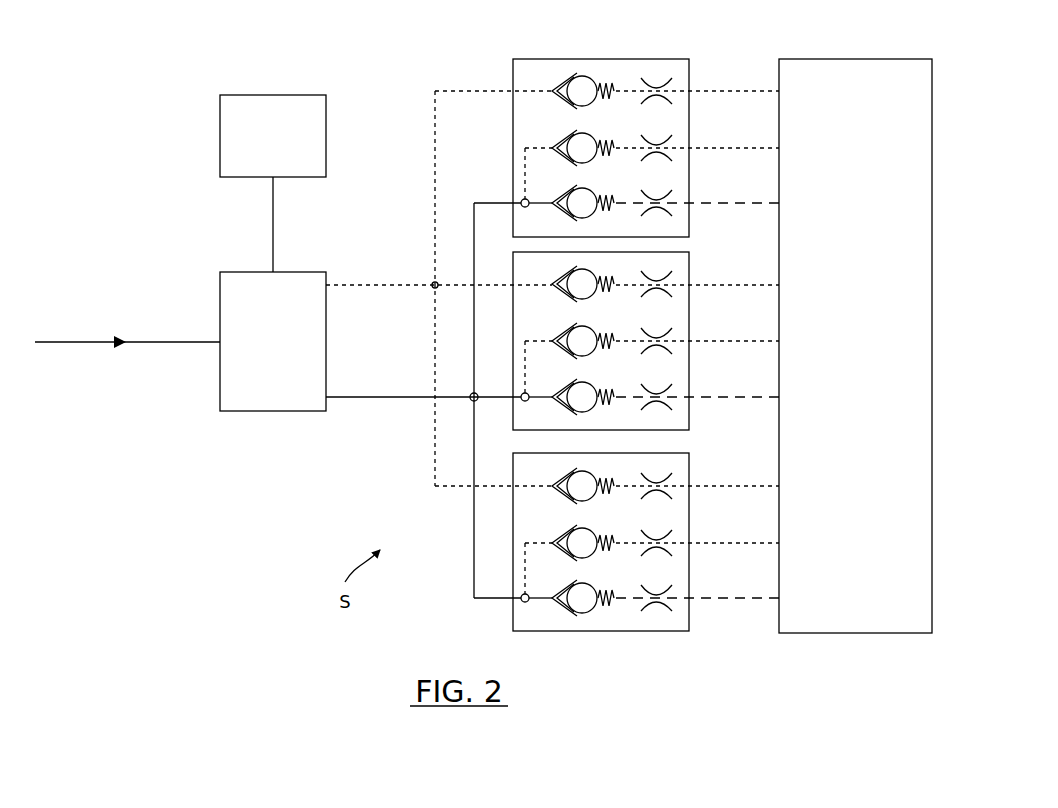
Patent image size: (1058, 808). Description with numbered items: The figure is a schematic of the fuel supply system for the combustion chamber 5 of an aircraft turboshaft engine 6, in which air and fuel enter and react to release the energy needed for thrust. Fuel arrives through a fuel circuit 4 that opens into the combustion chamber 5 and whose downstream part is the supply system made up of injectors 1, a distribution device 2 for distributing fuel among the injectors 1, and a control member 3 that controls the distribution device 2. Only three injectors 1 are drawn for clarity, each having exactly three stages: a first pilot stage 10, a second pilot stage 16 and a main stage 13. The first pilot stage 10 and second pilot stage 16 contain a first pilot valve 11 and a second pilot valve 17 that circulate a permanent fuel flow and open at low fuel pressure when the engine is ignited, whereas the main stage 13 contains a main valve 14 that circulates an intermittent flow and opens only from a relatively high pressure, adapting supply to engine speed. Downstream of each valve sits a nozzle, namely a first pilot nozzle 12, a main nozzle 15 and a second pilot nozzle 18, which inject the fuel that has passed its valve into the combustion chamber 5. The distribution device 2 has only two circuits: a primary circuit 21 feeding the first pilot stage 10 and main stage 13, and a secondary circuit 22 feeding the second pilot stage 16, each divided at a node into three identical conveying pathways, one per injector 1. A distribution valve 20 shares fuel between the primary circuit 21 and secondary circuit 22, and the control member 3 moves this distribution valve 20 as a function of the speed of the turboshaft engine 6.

The injector 1 is at (500, 62).
The distribution device 2 is at (413, 460).
The control member 3 is at (273, 183).
The fuel circuit 4 is at (47, 337).
The combustion chamber 5 is at (855, 346).
The turboshaft engine 6 is at (95, 173).
The first pilot stage 10 is at (757, 147).
The first pilot valve 11 is at (577, 131).
The first pilot nozzle 12 is at (657, 152).
The main stage 13 is at (757, 202).
The main valve 14 is at (577, 188).
The main nozzle 15 is at (657, 207).
The second pilot stage 16 is at (757, 90).
The second pilot valve 17 is at (578, 72).
The second pilot nozzle 18 is at (655, 87).
The distribution valve 20 is at (273, 341).
The primary circuit 21 is at (365, 400).
The secondary circuit 22 is at (365, 288).